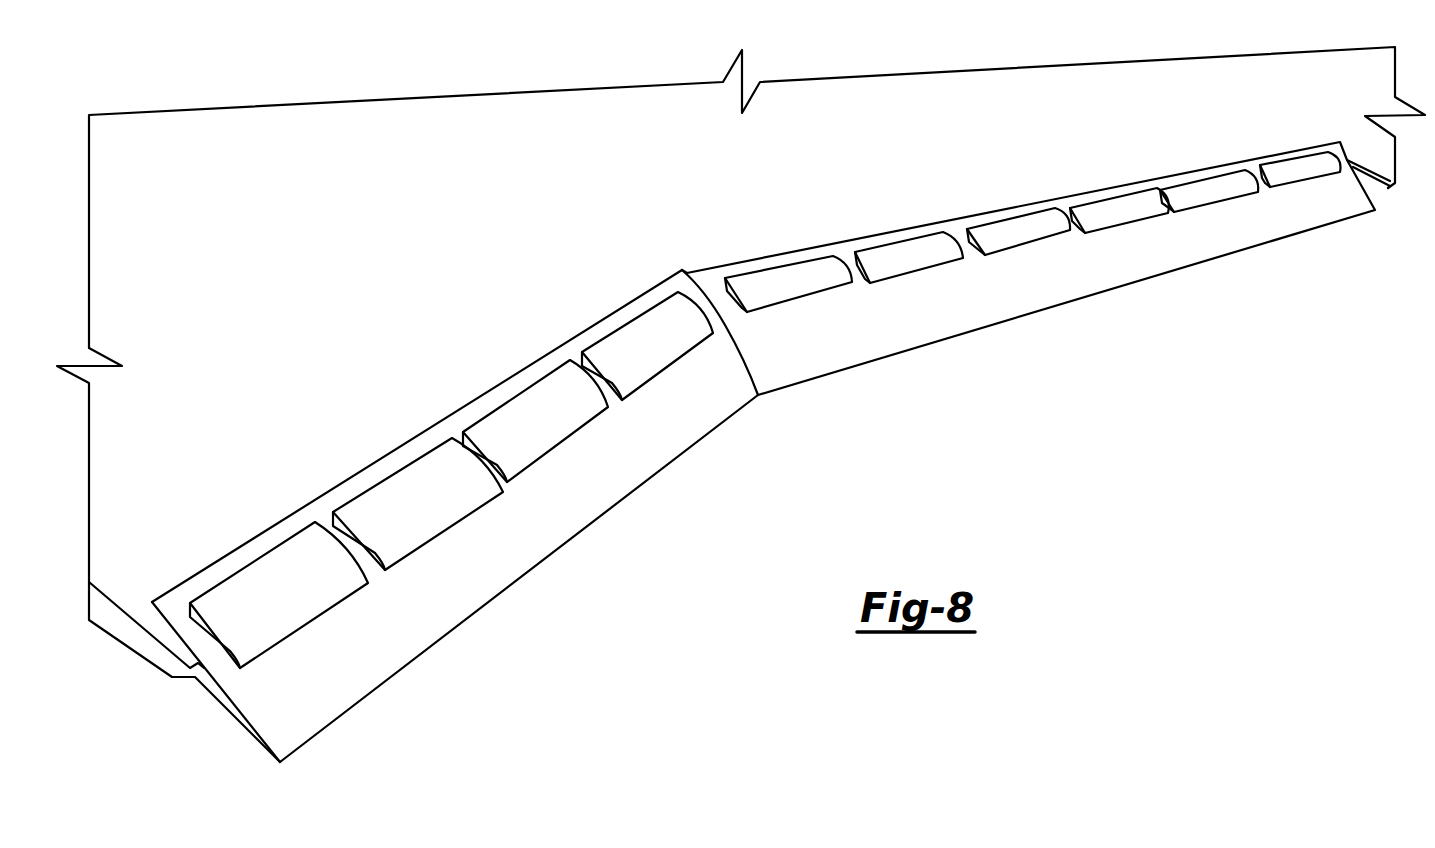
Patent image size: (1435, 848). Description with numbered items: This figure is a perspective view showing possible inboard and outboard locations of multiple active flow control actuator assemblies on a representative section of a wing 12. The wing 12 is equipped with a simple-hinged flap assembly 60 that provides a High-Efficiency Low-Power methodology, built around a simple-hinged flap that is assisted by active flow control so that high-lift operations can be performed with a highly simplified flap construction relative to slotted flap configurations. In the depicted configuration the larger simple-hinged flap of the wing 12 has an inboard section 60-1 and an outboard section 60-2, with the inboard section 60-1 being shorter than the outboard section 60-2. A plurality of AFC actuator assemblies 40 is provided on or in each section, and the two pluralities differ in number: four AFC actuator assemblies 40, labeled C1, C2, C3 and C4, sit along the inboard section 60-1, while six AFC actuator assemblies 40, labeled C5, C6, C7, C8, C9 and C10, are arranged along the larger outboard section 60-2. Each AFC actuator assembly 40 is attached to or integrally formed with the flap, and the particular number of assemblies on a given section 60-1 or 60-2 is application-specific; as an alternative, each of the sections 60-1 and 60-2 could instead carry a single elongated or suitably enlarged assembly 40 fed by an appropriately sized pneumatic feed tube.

The wing 12 is at (365, 256).
The AFC actuator assembly 40 is at (784, 410).
The simple-hinged flap assembly 60 is at (771, 452).
The inboard section 60-1 is at (455, 516).
The outboard section 60-2 is at (1036, 268).
The AFC actuator assembly C1 is at (279, 595).
The AFC actuator assembly C2 is at (418, 504).
The AFC actuator assembly C3 is at (535, 421).
The AFC actuator assembly C4 is at (647, 346).
The AFC actuator assembly C5 is at (788, 284).
The AFC actuator assembly C6 is at (909, 257).
The AFC actuator assembly C7 is at (1018, 231).
The AFC actuator assembly C8 is at (1119, 210).
The AFC actuator assembly C9 is at (1209, 191).
The AFC actuator assembly C10 is at (1300, 169).